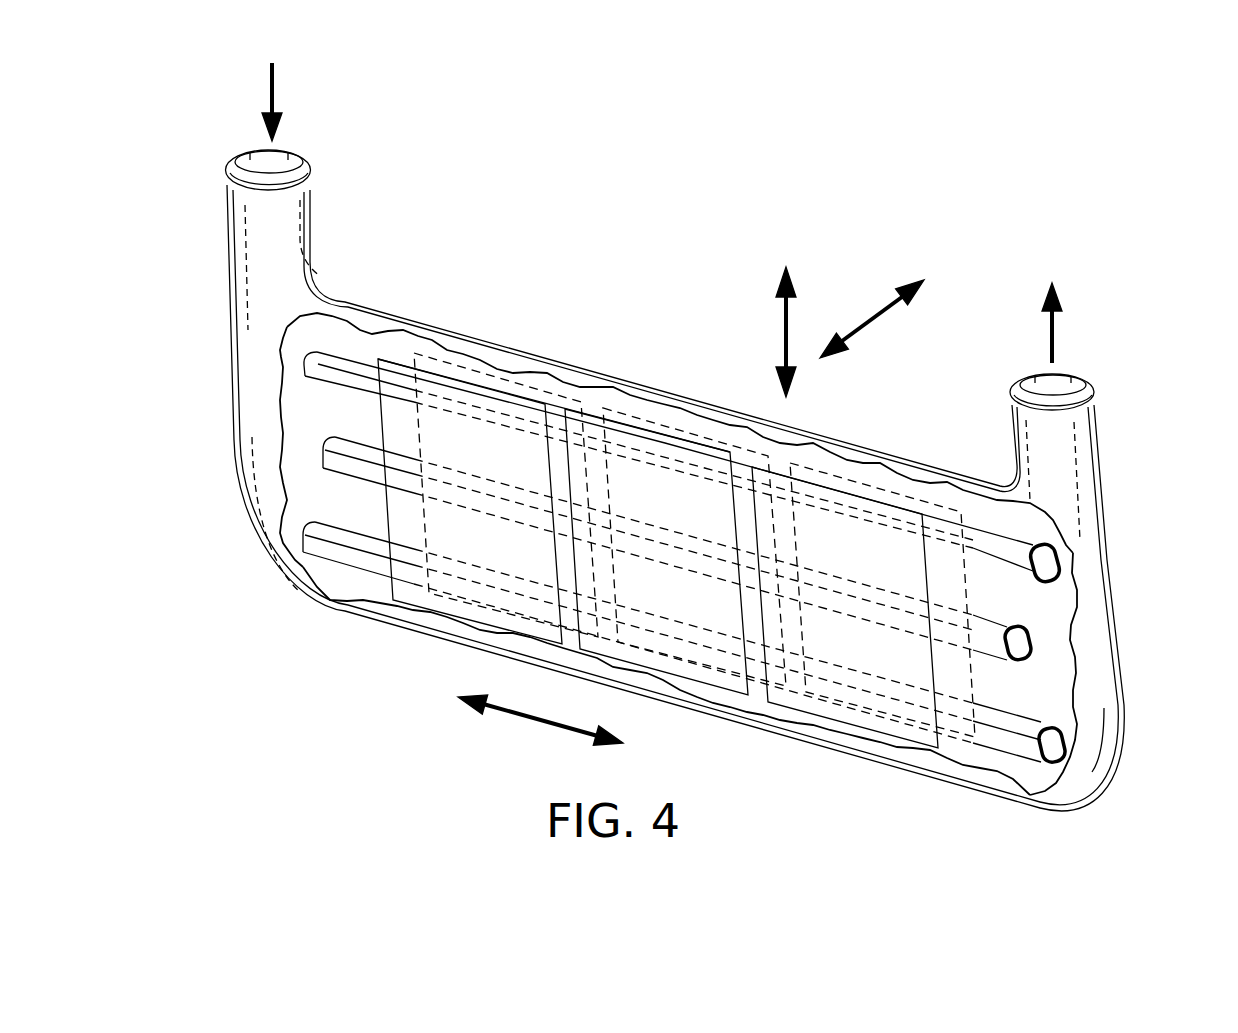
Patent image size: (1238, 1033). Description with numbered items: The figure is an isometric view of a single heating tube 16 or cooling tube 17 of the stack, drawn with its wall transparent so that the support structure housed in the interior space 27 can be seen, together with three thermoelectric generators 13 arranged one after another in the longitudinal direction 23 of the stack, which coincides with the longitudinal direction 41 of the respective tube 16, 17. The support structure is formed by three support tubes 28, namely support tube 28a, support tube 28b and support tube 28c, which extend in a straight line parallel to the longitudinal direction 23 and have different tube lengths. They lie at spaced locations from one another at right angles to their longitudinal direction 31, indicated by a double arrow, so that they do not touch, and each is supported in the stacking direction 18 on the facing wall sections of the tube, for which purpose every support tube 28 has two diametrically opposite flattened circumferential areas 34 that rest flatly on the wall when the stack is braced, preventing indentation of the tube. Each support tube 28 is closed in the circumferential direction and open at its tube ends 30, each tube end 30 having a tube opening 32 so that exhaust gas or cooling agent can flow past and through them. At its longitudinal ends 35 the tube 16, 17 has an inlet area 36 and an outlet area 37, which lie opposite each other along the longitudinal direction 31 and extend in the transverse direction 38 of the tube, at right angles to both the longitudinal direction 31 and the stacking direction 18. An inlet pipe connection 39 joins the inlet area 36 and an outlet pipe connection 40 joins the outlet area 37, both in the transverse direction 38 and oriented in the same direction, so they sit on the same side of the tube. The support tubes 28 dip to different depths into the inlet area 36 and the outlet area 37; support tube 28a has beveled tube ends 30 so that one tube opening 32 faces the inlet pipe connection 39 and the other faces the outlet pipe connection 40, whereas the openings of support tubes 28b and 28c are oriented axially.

The thermoelectric generator 13 is at (525, 387).
The heating tube 16 is at (698, 292).
The cooling tube 17 is at (655, 312).
The stacking direction 18 is at (873, 316).
The longitudinal direction of the stack 23 is at (506, 729).
The interior space 27 is at (684, 688).
The support tubes 28 is at (602, 583).
The support tube 28a is at (962, 539).
The support tube 28b is at (980, 647).
The support tube 28c is at (1010, 745).
The tube ends 30 is at (317, 365).
The longitudinal direction of the tube 31 is at (506, 729).
The tube opening 32 is at (1045, 560).
The flattened circumferential areas 34 is at (372, 473).
The longitudinal ends 35 is at (235, 402).
The inlet area 36 is at (302, 420).
The outlet area 37 is at (1053, 673).
The transverse direction of the tube 38 is at (788, 323).
The inlet pipe connection 39 is at (312, 215).
The outlet pipe connection 40 is at (1096, 433).
The longitudinal direction of the respective tube 41 is at (532, 720).